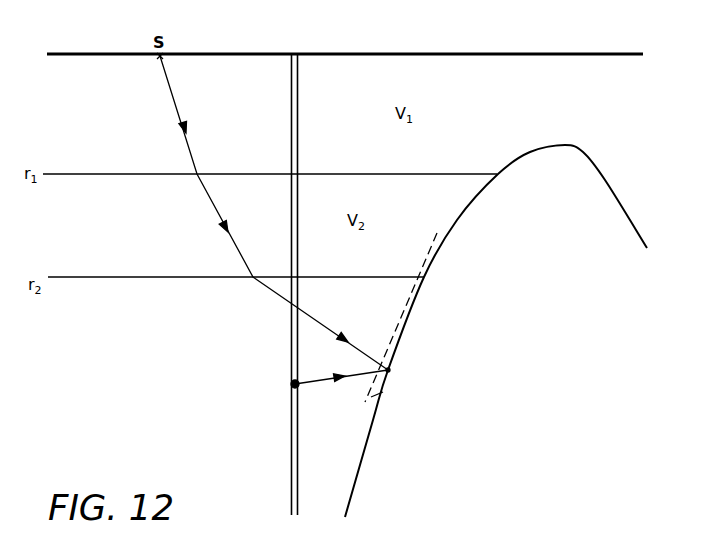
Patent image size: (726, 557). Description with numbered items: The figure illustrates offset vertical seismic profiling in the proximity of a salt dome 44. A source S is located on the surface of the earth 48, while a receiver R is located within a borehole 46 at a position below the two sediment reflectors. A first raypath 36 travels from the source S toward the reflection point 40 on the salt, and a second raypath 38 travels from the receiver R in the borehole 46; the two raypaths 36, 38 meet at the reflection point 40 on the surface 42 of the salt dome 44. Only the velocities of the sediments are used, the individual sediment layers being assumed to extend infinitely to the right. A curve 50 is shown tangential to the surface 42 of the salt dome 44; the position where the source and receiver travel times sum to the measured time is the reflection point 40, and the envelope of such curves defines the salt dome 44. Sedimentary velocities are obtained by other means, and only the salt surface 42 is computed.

The raypath 36 is at (209, 205).
The raypath 38 is at (362, 377).
The reflection point 40 is at (391, 371).
The surface of salt dome 42 is at (394, 359).
The salt dome 44 is at (520, 157).
The borehole 46 is at (298, 53).
The surface of the earth 48 is at (248, 52).
The curve 50 is at (381, 394).